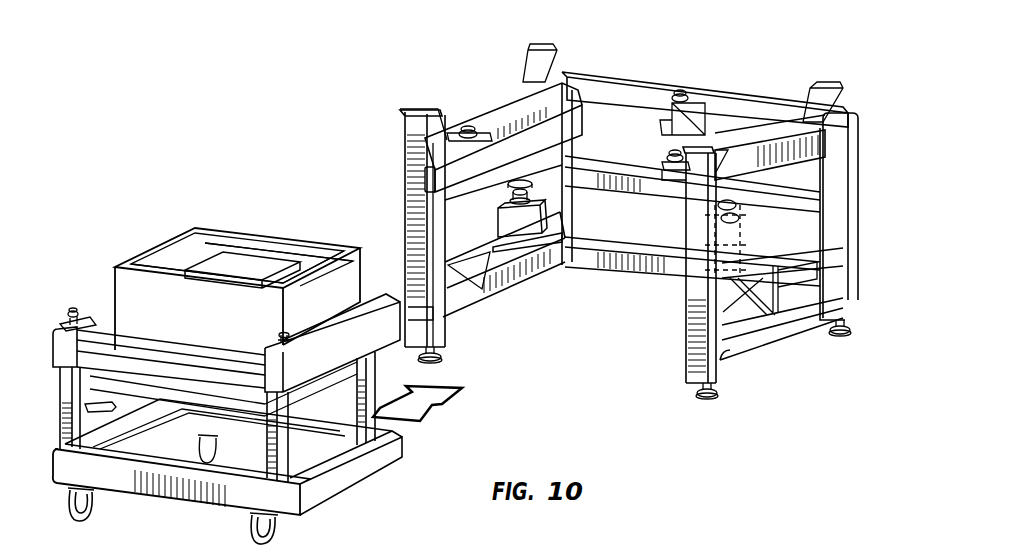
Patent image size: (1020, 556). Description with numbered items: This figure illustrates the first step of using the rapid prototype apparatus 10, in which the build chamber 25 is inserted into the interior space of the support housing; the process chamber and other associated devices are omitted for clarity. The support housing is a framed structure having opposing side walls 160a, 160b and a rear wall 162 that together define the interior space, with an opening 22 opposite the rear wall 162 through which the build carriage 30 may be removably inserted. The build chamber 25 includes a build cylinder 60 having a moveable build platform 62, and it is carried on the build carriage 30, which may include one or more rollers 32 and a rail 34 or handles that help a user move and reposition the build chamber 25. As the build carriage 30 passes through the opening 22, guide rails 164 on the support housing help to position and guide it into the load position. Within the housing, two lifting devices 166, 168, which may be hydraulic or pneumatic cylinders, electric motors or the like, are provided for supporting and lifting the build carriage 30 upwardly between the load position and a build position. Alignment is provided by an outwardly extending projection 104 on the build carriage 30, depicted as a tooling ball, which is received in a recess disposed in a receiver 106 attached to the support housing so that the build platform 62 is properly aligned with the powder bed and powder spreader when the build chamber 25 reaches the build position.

The rapid prototype apparatus 10 is at (832, 549).
The opening 22 is at (484, 223).
The build chamber 25 is at (172, 238).
The build carriage 30 is at (53, 347).
The rollers 32 is at (253, 528).
The rail 34 is at (62, 397).
The build cylinder 60 is at (295, 268).
The build platform 62 is at (230, 257).
The outwardly extending projection 104 is at (78, 310).
The receiver 106 is at (460, 132).
The side wall 160a is at (853, 210).
The side wall 160b is at (483, 100).
The rear wall 162 is at (743, 90).
The guide rails 164 is at (422, 180).
The lifting device 166 is at (533, 222).
The lifting device 168 is at (700, 252).